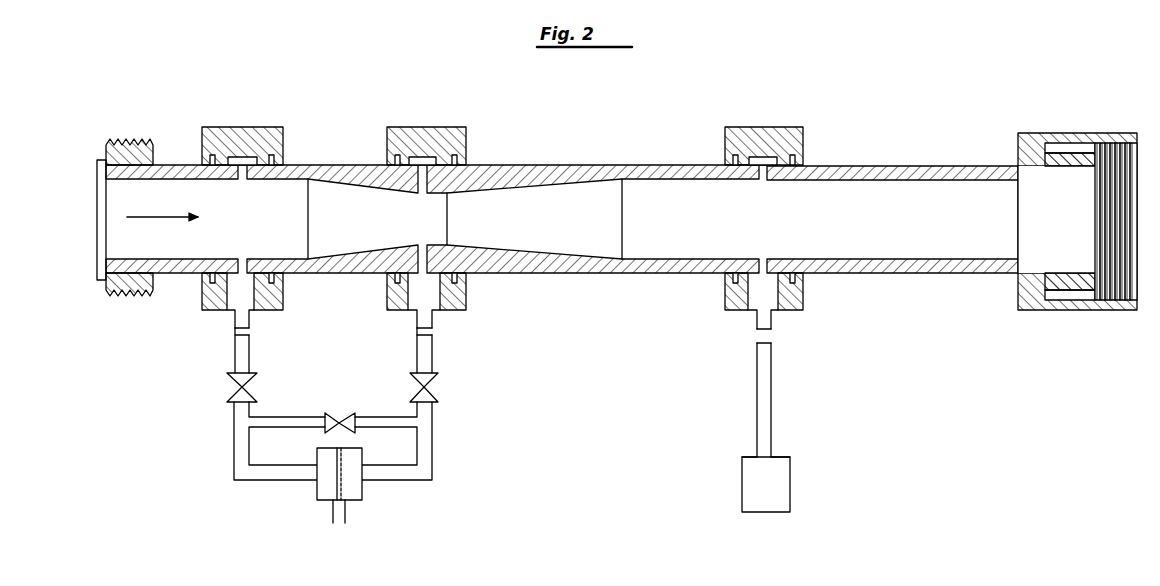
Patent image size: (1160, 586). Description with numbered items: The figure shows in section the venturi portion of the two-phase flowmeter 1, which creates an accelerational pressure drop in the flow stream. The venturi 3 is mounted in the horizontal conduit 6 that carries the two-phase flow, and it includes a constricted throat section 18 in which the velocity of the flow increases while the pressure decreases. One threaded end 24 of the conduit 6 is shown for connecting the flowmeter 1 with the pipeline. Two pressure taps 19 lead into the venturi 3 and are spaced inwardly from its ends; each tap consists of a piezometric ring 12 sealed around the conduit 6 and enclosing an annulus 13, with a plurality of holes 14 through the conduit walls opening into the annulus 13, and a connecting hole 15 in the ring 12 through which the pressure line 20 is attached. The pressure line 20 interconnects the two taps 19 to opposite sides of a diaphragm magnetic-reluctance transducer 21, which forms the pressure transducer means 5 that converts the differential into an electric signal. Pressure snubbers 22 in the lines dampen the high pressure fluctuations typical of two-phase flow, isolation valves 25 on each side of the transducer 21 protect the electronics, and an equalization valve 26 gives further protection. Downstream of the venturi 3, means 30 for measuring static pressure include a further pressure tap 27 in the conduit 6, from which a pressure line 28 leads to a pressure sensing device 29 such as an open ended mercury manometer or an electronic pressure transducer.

The flowmeter 1 is at (162, 88).
The venturi 3 is at (326, 190).
The pressure transducer means 5 is at (362, 488).
The horizontal conduit 6 is at (607, 166).
The piezometric ring 12 is at (202, 142).
The annulus 13 is at (239, 158).
The holes 14 is at (243, 180).
The connecting hole 15 is at (265, 311).
The constricted throat section 18 is at (442, 205).
The pressure taps 19 is at (258, 127).
The pressure line 20 is at (235, 355).
The diaphragm magnetic-reluctance transducer 21 is at (317, 481).
The pressure snubbers 22 is at (250, 333).
The threaded end of conduit 24 is at (1097, 134).
The isolation valves 25 is at (257, 388).
The equalization valve 26 is at (339, 415).
The pressure tap 27 is at (800, 292).
The pressure line 28 is at (771, 396).
The pressure sensing device 29 is at (775, 490).
The static pressure measuring means 30 is at (790, 460).